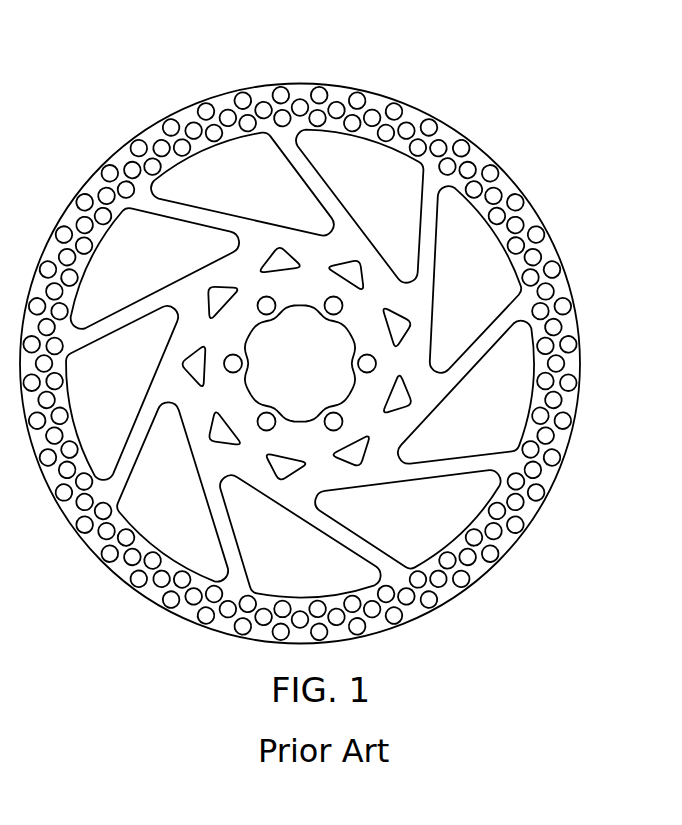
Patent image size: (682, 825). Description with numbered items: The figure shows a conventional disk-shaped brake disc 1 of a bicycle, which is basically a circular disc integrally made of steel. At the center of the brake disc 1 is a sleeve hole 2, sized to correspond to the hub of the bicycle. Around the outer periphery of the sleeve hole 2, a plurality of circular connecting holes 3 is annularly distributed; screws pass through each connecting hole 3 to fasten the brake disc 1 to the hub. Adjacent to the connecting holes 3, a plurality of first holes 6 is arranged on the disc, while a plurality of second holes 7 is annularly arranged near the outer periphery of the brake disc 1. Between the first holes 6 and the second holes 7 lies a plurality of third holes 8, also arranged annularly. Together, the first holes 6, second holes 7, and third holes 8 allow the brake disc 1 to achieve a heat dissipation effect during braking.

The brake disc 1 is at (392, 90).
The sleeve hole 2 is at (294, 307).
The connecting hole 3 is at (334, 306).
The first hole 6 is at (405, 400).
The second hole 7 is at (548, 291).
The third hole 8 is at (484, 242).